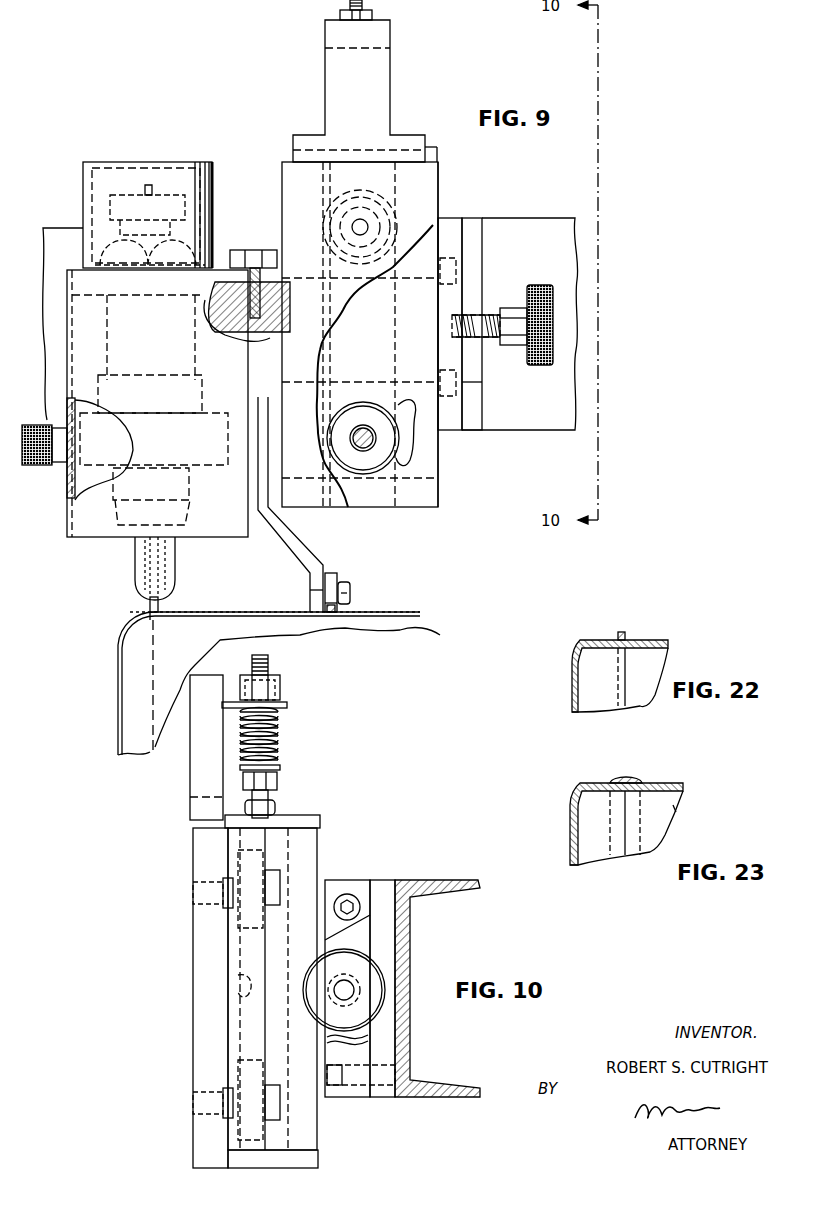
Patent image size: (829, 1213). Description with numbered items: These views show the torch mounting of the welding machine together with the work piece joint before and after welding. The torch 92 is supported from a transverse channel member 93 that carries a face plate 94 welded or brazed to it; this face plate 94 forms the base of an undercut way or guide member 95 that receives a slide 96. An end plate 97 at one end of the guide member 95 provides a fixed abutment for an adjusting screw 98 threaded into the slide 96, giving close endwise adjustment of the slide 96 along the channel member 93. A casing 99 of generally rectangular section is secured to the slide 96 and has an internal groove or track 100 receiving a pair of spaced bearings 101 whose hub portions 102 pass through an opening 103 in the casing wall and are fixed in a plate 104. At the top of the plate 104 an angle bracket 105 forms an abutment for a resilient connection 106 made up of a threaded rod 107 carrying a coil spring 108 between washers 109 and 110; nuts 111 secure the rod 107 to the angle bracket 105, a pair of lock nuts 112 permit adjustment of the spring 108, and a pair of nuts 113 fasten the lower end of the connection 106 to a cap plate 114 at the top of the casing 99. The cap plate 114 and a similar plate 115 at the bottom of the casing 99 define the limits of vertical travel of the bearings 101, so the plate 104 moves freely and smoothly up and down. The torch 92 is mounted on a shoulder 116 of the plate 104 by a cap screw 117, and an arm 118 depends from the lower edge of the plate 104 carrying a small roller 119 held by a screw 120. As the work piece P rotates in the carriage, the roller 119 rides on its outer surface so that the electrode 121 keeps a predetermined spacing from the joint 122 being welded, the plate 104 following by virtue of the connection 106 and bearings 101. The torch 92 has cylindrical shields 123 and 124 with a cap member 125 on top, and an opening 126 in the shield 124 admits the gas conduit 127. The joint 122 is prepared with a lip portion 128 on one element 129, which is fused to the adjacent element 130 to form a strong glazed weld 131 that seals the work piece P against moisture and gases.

In FIG. 9, the torch 92 is at (214, 180).
In FIG. 9, the transverse channel member 93 is at (541, 226).
In FIG. 10, the transverse channel member 93 is at (430, 880).
In FIG. 9, the face plate 94 is at (458, 292).
In FIG. 10, the face plate 94 is at (385, 882).
In FIG. 9, the undercut way or guide member 95 is at (445, 232).
In FIG. 10, the undercut way or guide member 95 is at (354, 1088).
In FIG. 9, the slide 96 is at (445, 370).
In FIG. 10, the slide 96 is at (325, 925).
In FIG. 9, the end plate 97 is at (474, 424).
In FIG. 10, the end plate 97 is at (355, 895).
In FIG. 9, the adjusting screw 98 is at (545, 336).
In FIG. 10, the adjusting screw 98 is at (360, 992).
In FIG. 9, the casing 99 is at (420, 191).
In FIG. 10, the casing 99 is at (305, 845).
In FIG. 9, the groove or track 100 is at (392, 406).
In FIG. 10, the groove or track 100 is at (235, 988).
In FIG. 9, the bearings 101 is at (374, 248).
In FIG. 10, the bearings 101 is at (248, 866).
In FIG. 9, the hub portions 102 is at (364, 449).
In FIG. 10, the hub portions 102 is at (212, 895).
In FIG. 9, the opening 103 is at (327, 326).
In FIG. 9, the plate 104 is at (292, 185).
In FIG. 10, the plate 104 is at (205, 942).
In FIG. 9, the angle bracket 105 is at (383, 100).
In FIG. 10, the angle bracket 105 is at (200, 780).
In FIG. 9, the connection 106 is at (348, 5).
In FIG. 10, the connection 106 is at (272, 672).
In FIG. 10, the threaded rod 107 is at (276, 744).
In FIG. 10, the coil spring 108 is at (276, 724).
In FIG. 10, the washer 109 is at (286, 705).
In FIG. 10, the washer 110 is at (280, 768).
In FIG. 9, the nuts 111 is at (372, 14).
In FIG. 10, the nuts 111 is at (248, 672).
In FIG. 10, the lock nuts 112 is at (278, 786).
In FIG. 10, the nuts 113 is at (252, 808).
In FIG. 10, the cap plate 114 is at (300, 818).
In FIG. 10, the plate 115 is at (308, 1158).
In FIG. 9, the shoulder 116 is at (268, 318).
In FIG. 9, the cap screw 117 is at (250, 255).
In FIG. 9, the arm 118 is at (288, 543).
In FIG. 9, the roller 119 is at (334, 576).
In FIG. 9, the screw 120 is at (350, 595).
In FIG. 9, the electrode 121 is at (148, 603).
In FIG. 9, the joint 122 is at (160, 612).
In FIG. 9, the shield 123 is at (83, 168).
In FIG. 9, the shield 124 is at (67, 333).
In FIG. 9, the cap member 125 is at (112, 178).
In FIG. 9, the opening 126 is at (68, 472).
In FIG. 9, the conduit 127 is at (35, 432).
In FIG. 22, the lip portion 128 is at (626, 634).
In FIG. 22, the element 129 is at (570, 708).
In FIG. 23, the element 129 is at (574, 805).
In FIG. 23, the element 130 is at (674, 806).
In FIG. 23, the glazed weld 131 is at (633, 779).
In FIG. 9, the work piece P is at (240, 614).
In FIG. 22, the work piece P is at (592, 641).
In FIG. 23, the work piece P is at (683, 793).